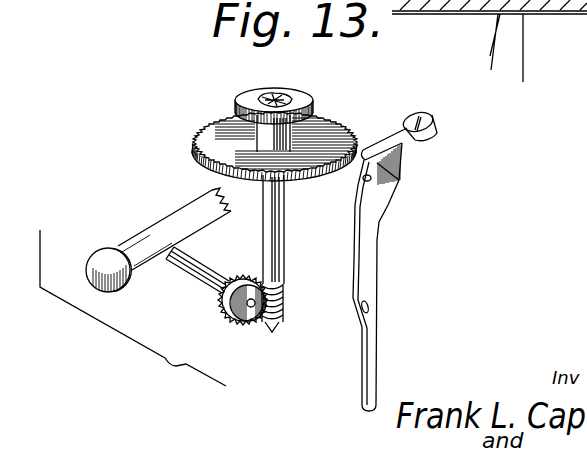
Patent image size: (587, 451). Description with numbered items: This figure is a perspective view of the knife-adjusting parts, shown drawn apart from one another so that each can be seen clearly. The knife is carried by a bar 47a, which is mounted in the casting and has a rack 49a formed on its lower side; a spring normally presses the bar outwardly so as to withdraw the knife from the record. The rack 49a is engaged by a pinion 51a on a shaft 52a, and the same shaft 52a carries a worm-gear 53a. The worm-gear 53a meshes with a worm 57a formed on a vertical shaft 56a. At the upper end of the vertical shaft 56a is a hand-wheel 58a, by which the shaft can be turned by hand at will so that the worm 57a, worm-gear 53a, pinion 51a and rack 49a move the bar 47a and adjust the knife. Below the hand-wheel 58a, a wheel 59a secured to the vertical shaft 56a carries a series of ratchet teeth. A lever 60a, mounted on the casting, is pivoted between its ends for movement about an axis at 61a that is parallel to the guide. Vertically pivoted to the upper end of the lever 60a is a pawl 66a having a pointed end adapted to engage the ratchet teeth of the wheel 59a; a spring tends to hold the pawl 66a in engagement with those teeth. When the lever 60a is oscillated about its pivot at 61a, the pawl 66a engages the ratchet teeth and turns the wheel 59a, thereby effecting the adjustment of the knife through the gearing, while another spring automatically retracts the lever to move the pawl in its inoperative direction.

The bar 47a is at (148, 229).
The rack 49a is at (160, 262).
The pinion 51a is at (181, 258).
The shaft 52a is at (210, 285).
The worm-gear 53a is at (243, 325).
The vertical shaft 56a is at (293, 247).
The worm 57a is at (279, 320).
The hand-wheel 58a is at (310, 100).
The wheel 59a is at (201, 143).
The lever 60a is at (373, 255).
The pivot axis 61a is at (370, 307).
The pawl 66a is at (360, 170).